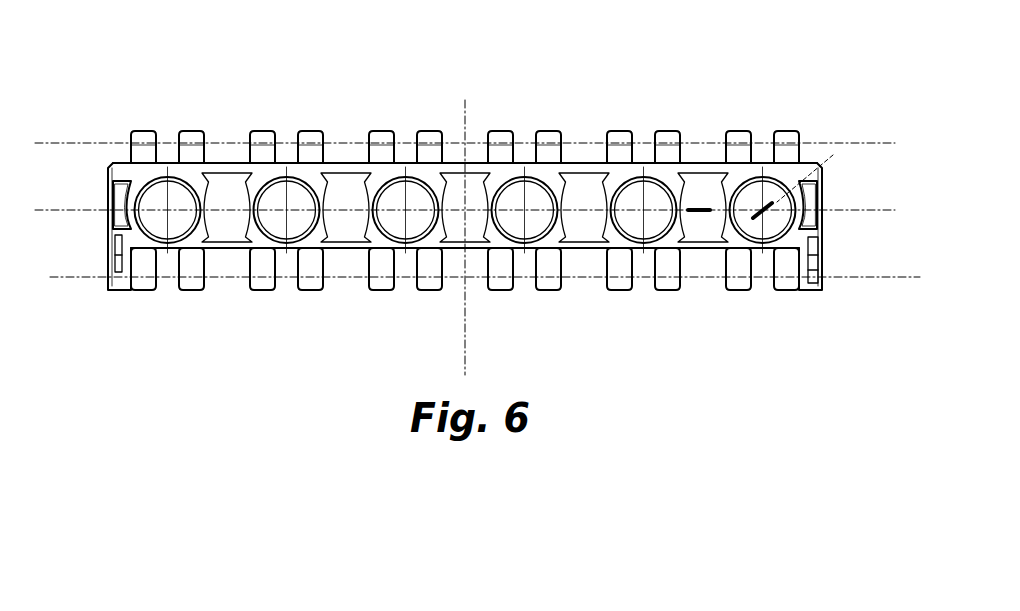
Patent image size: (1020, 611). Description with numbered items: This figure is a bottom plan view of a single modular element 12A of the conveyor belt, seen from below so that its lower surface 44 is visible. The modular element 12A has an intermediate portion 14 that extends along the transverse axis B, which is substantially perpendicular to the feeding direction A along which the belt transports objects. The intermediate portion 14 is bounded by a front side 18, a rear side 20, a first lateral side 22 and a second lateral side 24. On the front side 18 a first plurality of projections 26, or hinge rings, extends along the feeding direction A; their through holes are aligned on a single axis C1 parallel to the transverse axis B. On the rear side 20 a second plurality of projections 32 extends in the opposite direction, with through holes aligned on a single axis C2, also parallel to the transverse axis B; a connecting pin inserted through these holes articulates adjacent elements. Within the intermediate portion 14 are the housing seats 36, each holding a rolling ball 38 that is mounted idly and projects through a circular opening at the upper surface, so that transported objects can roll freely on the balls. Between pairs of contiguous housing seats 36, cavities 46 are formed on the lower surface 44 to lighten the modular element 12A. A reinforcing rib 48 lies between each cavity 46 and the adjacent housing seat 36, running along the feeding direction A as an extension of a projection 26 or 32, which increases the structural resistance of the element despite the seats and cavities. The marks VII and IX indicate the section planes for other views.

The modular element 12A is at (465, 182).
The intermediate portion 14 is at (668, 254).
The front side 18 is at (382, 258).
The rear side 20 is at (587, 160).
The first lateral side 22 is at (822, 238).
The second lateral side 24 is at (107, 185).
The first plurality of projections 26 is at (222, 288).
The second plurality of projections 32 is at (310, 132).
The housing seat 36 is at (382, 232).
The rolling ball 38 is at (414, 200).
The lower surface 44 is at (555, 235).
The cavity 46 is at (227, 218).
The reinforcing rib 48 is at (332, 193).
The feeding direction A is at (465, 117).
The transverse axis B is at (62, 212).
The axis of the first through holes C1 is at (906, 278).
The axis of the second through holes C2 is at (897, 143).
The section IX indicator IX is at (697, 206).
The section VII indicator VII is at (762, 203).